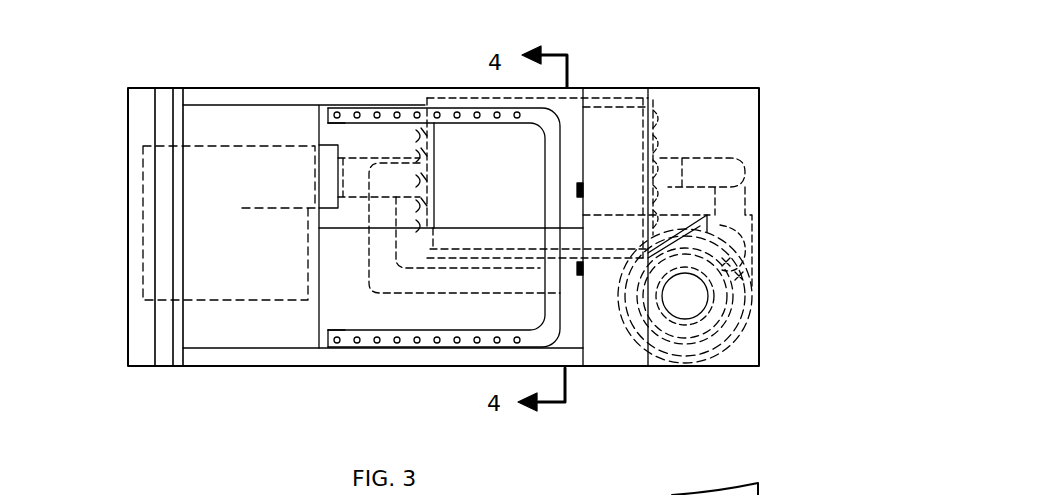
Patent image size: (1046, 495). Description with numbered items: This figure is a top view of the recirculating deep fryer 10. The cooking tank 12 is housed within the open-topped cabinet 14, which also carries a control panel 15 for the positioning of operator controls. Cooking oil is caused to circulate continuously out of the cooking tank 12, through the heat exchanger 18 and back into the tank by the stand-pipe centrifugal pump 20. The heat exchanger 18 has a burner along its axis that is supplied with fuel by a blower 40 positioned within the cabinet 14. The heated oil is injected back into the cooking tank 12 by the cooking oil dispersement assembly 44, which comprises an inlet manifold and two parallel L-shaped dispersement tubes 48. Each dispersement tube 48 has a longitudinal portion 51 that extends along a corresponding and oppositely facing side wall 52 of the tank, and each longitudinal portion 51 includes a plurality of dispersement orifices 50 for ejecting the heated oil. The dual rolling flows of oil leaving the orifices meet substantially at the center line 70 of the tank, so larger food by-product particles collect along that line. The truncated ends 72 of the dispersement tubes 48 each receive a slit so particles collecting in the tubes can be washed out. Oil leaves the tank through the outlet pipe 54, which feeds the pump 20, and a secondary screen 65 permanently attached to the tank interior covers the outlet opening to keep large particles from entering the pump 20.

The deep fryer 10 is at (744, 78).
The cooking tank 12 is at (332, 311).
The cabinet 14 is at (227, 358).
The control panel 15 is at (148, 118).
The heat exchanger 18 is at (613, 127).
The stand-pipe centrifugal pump 20 is at (769, 300).
The blower 40 is at (212, 262).
The cooking oil dispersement assembly 44 is at (538, 185).
The dispersement tubes 48 is at (508, 126).
The dispersement orifices 50 is at (397, 110).
The longitudinal portion 51 is at (450, 132).
The side wall 52 is at (415, 108).
The outlet pipe 54 is at (607, 225).
The secondary screen 65 is at (582, 228).
The center line 70 is at (341, 233).
The truncated ends 72 is at (312, 108).